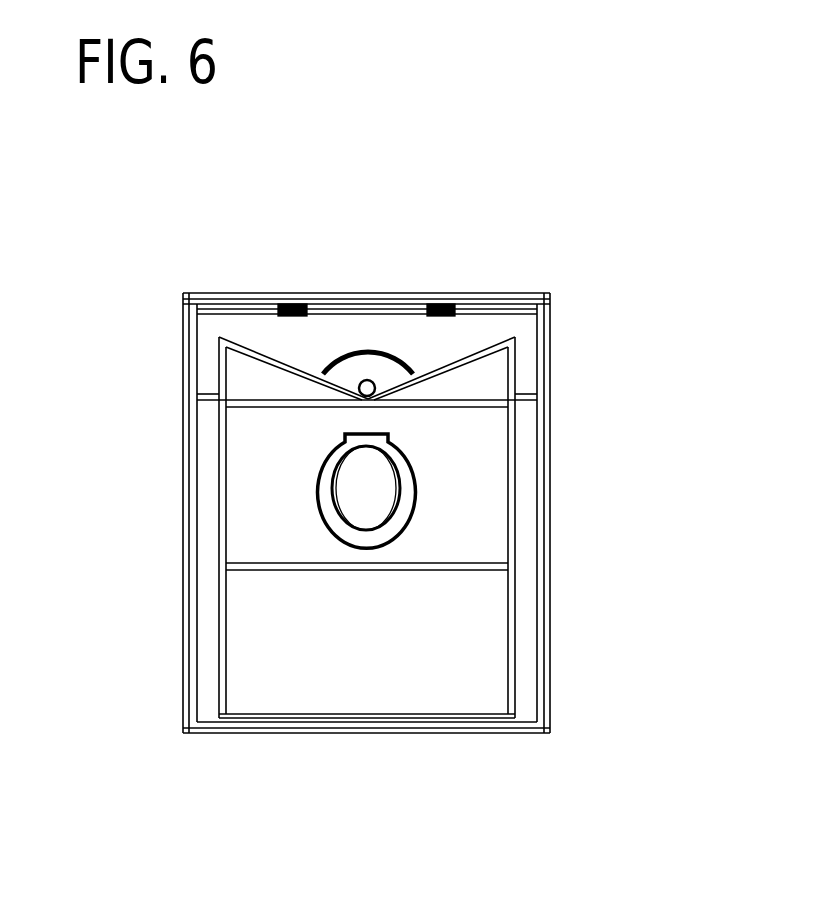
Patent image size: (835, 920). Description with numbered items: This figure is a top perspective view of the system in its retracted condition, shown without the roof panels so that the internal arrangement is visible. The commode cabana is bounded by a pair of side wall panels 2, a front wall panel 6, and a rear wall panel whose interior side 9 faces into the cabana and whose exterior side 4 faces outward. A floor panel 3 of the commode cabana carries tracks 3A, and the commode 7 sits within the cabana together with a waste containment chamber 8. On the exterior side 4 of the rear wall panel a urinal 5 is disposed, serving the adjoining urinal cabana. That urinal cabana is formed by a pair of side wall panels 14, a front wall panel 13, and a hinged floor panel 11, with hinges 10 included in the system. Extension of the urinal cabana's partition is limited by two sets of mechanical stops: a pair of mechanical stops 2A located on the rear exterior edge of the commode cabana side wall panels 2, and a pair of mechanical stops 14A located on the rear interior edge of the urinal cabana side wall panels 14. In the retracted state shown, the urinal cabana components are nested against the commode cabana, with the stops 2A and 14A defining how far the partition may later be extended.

The side wall panels of the commode cabana 2 is at (218, 642).
The mechanical stops 2A is at (203, 392).
The floor panel of the commode cabana 3 is at (367, 520).
The tracks 3A is at (212, 543).
The exterior side of a rear wall panel of the commode cabana 4 is at (262, 353).
The urinal 5 is at (362, 350).
The front wall panel of the commode cabana 6 is at (450, 717).
The commode 7 is at (368, 490).
The waste containment chamber 8 is at (367, 488).
The interior side of the rear wall panel of the commode cabana 9 is at (447, 402).
The hinges 10 is at (297, 295).
The hinged floor panel of the urinal cabana 11 is at (507, 312).
The front wall panel of the urinal cabana 13 is at (220, 293).
The side wall panels of the urinal cabana 14 is at (183, 470).
The mechanical stops 14A is at (200, 713).